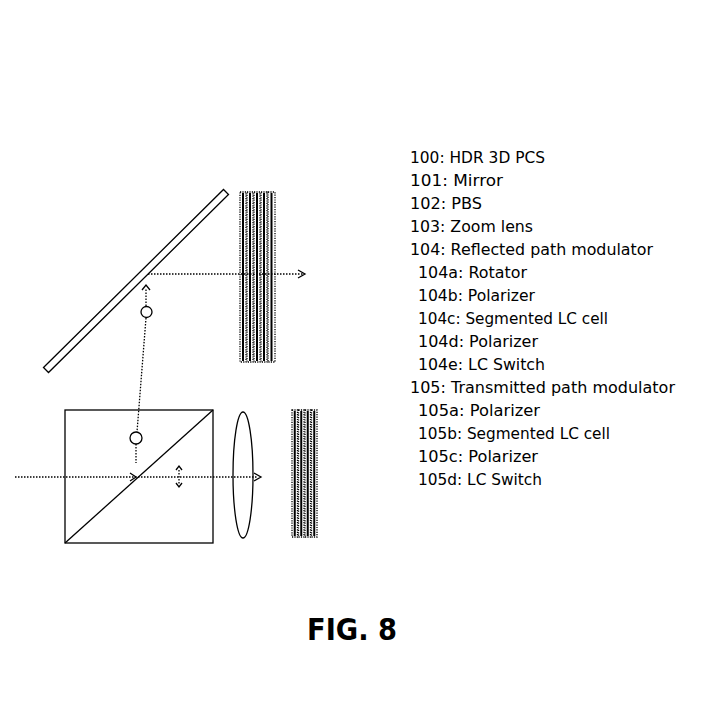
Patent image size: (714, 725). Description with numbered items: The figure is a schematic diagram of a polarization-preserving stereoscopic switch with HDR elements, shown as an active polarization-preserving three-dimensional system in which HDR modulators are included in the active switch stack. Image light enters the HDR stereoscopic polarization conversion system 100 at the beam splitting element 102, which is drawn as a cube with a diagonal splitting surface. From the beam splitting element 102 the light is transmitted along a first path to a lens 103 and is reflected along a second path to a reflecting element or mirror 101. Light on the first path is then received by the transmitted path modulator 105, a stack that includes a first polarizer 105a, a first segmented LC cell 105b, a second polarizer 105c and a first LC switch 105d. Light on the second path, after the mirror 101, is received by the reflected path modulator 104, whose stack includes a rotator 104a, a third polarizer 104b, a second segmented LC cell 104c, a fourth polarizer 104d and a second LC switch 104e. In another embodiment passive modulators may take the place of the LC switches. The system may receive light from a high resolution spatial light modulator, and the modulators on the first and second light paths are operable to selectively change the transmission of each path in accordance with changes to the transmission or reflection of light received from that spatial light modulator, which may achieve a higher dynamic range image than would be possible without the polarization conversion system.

The HDR stereoscopic polarization conversion system 100 is at (163, 295).
The mirror 101 is at (136, 281).
The beam splitting element 102 is at (139, 476).
The lens 103 is at (238, 488).
The reflected path modulator 104 is at (255, 260).
The rotator 104a is at (238, 189).
The third polarizer 104b is at (248, 189).
The second segmented LC cell 104c is at (255, 190).
The fourth polarizer 104d is at (265, 190).
The second LC switch 104e is at (272, 190).
The transmitted path modulator 105 is at (332, 449).
The first polarizer 105a is at (295, 409).
The first segmented LC cell 105b is at (300, 409).
The second polarizer 105c is at (305, 409).
The first LC switch 105d is at (312, 409).